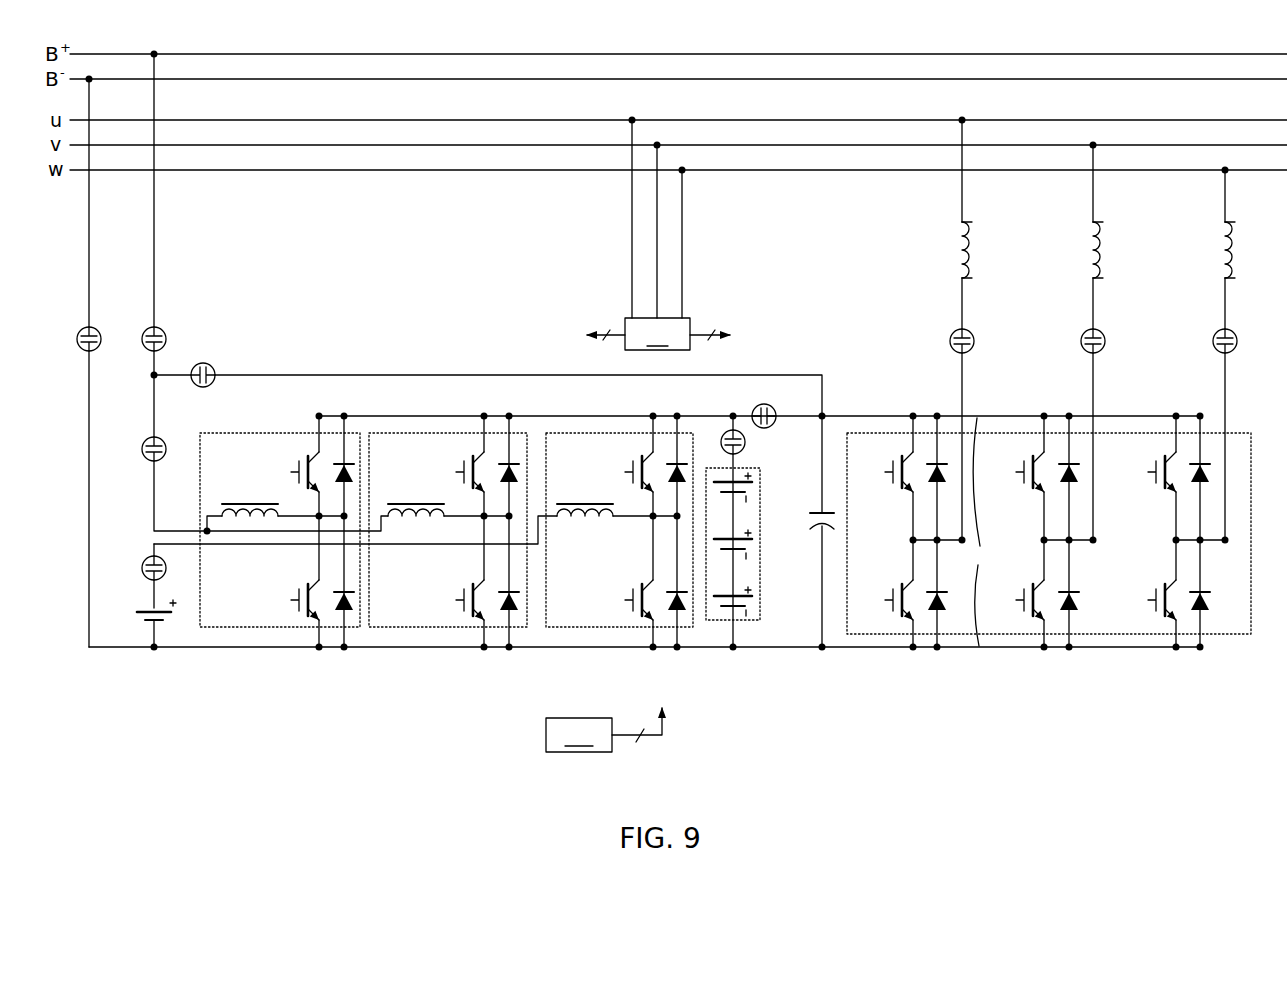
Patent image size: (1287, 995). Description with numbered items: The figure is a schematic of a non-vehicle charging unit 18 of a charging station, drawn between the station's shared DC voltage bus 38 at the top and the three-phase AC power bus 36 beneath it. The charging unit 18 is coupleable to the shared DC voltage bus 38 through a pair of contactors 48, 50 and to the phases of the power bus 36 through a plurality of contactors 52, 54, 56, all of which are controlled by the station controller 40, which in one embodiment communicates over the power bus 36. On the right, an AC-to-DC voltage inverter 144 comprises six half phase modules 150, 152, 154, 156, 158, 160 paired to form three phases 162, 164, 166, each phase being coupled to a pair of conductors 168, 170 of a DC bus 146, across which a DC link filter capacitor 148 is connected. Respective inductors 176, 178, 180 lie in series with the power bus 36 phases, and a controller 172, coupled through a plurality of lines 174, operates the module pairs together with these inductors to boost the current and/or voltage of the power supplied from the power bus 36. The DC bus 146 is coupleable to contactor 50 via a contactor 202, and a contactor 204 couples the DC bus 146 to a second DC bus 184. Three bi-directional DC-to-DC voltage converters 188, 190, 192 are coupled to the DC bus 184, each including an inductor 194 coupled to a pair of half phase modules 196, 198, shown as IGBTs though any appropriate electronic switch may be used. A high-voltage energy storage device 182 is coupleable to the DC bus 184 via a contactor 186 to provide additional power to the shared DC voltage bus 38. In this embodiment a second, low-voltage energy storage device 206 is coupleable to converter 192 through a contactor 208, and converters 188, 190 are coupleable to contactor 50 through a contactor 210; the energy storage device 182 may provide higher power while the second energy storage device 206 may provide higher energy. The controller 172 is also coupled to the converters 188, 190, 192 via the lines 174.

The charging unit 18 is at (350, 720).
The power bus 36 is at (370, 121).
The shared DC voltage bus 38 is at (405, 55).
The controller 40 is at (658, 234).
The contactor 48 is at (83, 329).
The contactor 50 is at (148, 329).
The contactor 52 is at (954, 331).
The contactor 54 is at (1085, 331).
The contactor 56 is at (1217, 331).
The AC-to-DC voltage inverter 144 is at (1251, 522).
The DC bus 146 is at (988, 532).
The DC link filter capacitor 148 is at (818, 512).
The half phase module 150 is at (878, 494).
The half phase module 152 is at (881, 620).
The half phase module 154 is at (1009, 494).
The half phase module 156 is at (1012, 620).
The half phase module 158 is at (1141, 494).
The half phase module 160 is at (1144, 620).
The phase 162 is at (923, 398).
The phase 164 is at (1054, 398).
The phase 166 is at (1186, 398).
The conductor 168 is at (1163, 415).
The conductor 170 is at (1165, 650).
The controller 172 is at (579, 735).
The lines 174 is at (654, 742).
The inductor 176 is at (970, 240).
The inductor 178 is at (1101, 240).
The inductor 180 is at (1226, 240).
The energy storage device 182 is at (744, 468).
The DC bus 184 is at (535, 415).
The contactor 186 is at (723, 433).
The bi-directional DC-to-DC voltage converter 188 is at (276, 432).
The bi-directional DC-to-DC voltage converter 190 is at (440, 432).
The bi-directional DC-to-DC voltage converter 192 is at (632, 432).
The inductor 194 is at (268, 503).
The half phase module 196 is at (281, 451).
The half phase module 198 is at (281, 588).
The contactor 202 is at (209, 364).
The contactor 204 is at (772, 407).
The second energy storage device 206 is at (143, 611).
The contactor 208 is at (143, 559).
The contactor 210 is at (143, 440).